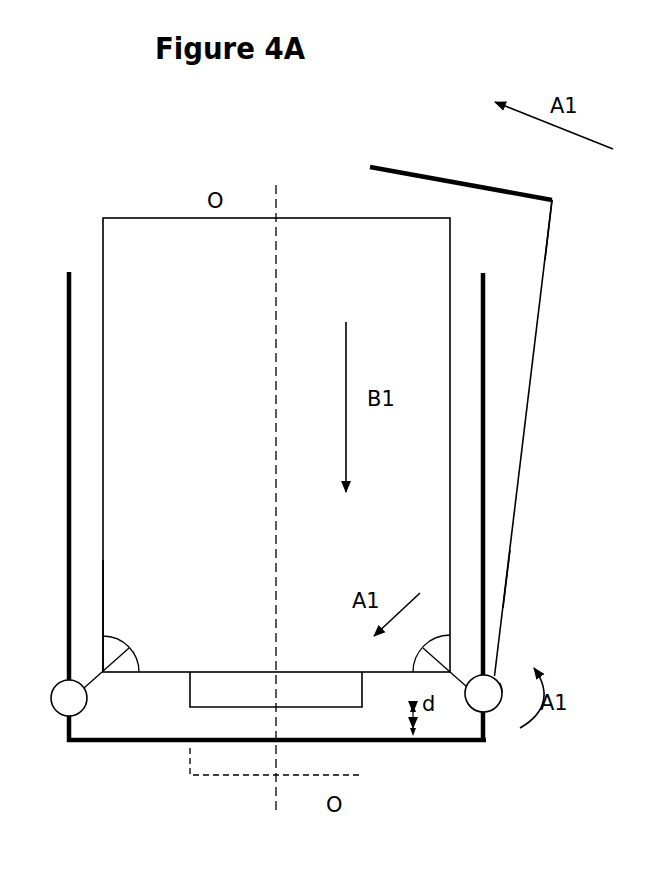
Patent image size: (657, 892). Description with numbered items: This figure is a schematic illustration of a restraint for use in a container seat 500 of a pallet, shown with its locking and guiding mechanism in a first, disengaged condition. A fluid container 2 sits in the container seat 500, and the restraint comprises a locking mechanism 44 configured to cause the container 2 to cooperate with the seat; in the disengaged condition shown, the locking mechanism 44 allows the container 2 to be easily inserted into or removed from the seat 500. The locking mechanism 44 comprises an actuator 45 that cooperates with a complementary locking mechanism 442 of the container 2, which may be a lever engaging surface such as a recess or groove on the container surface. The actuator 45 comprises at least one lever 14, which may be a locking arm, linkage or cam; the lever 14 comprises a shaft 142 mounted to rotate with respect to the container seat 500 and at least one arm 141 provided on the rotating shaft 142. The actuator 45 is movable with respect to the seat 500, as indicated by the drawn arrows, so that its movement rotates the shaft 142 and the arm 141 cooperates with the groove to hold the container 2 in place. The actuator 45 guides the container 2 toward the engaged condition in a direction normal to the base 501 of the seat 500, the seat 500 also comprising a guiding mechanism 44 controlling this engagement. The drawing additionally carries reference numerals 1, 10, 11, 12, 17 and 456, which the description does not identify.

The apparatus 1 is at (651, 501).
The fluid container 2 is at (183, 587).
The container 10 is at (103, 247).
The container side wall 11 is at (102, 612).
The hinged wall 12 is at (530, 392).
The lever 14 is at (452, 686).
The flap 17 is at (467, 181).
The locking mechanism 44 is at (562, 229).
The actuator 45 is at (518, 597).
The arm 141 is at (467, 704).
The shaft 142 is at (502, 684).
The complementary locking mechanism 442 is at (459, 628).
The bottom recess 456 is at (199, 687).
The container seat 500 is at (489, 737).
The base 501 is at (190, 762).